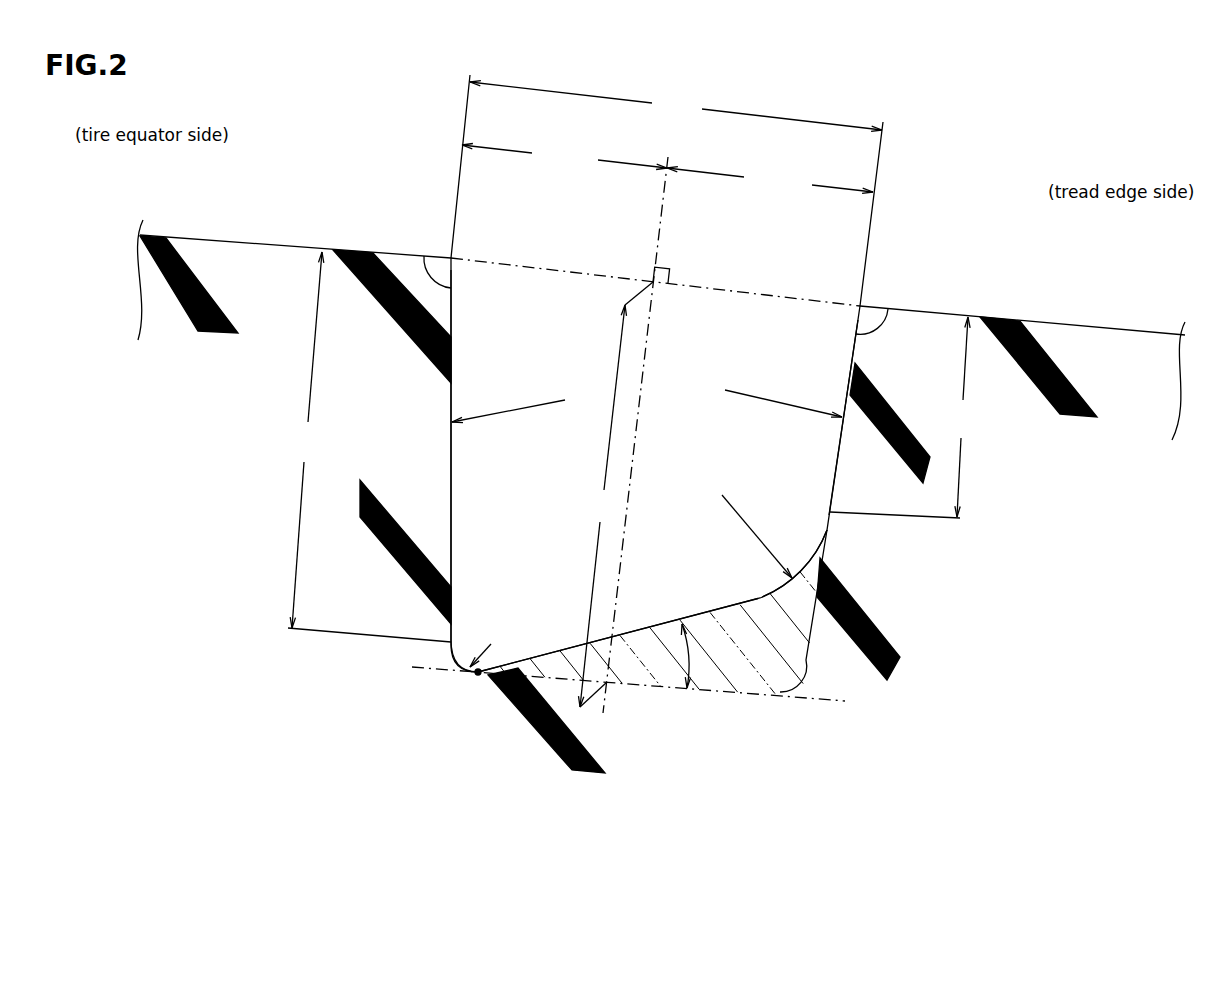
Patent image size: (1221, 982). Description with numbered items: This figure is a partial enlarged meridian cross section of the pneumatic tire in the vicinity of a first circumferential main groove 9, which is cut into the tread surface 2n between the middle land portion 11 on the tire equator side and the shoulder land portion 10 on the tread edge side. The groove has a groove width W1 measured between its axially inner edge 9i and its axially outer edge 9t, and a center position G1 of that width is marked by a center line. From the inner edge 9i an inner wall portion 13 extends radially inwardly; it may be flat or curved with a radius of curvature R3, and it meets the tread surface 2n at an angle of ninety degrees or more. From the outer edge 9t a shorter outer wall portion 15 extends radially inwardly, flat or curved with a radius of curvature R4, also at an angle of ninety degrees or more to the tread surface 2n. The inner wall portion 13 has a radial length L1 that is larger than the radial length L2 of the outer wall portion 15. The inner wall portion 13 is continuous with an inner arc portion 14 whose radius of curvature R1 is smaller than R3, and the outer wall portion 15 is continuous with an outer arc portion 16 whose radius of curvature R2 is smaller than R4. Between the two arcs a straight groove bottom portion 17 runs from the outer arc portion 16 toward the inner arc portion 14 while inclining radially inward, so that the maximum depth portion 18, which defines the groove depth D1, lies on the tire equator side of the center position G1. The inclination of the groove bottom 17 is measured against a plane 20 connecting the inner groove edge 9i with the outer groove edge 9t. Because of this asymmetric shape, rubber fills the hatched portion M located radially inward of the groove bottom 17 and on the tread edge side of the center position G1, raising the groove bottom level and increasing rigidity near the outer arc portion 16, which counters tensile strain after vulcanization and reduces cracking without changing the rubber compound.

The tread surface 2n is at (312, 247).
The middle land portion 11 is at (271, 296).
The shoulder land portion 10 is at (1124, 381).
The circumferential main groove 9 is at (724, 563).
The axially inner edge 9i is at (452, 258).
The axially outer edge 9t is at (858, 305).
The inner wall portion 13 is at (452, 362).
The outer wall portion 15 is at (852, 380).
The inner arc portion 14 is at (456, 655).
The outer arc portion 16 is at (823, 553).
The groove bottom portion 17 is at (560, 650).
The maximum depth portion 18 is at (478, 676).
The plane connecting the inner groove edge with the outer groove edge 20 is at (587, 273).
The portion located radially inward of the groove bottom M is at (843, 701).
The center position of groove width G1 is at (644, 423).
The groove width W1 is at (672, 138).
The radial length of inner wall portion L1 is at (307, 440).
The radial length of outer wall portion L2 is at (962, 417).
The groove depth D1 is at (616, 494).
The radius of curvature of inner arc portion R1 is at (495, 650).
The radius of curvature of outer arc portion R2 is at (740, 525).
The radius of curvature of inner wall portion R3 is at (525, 404).
The radius of curvature of outer wall portion R4 is at (766, 395).